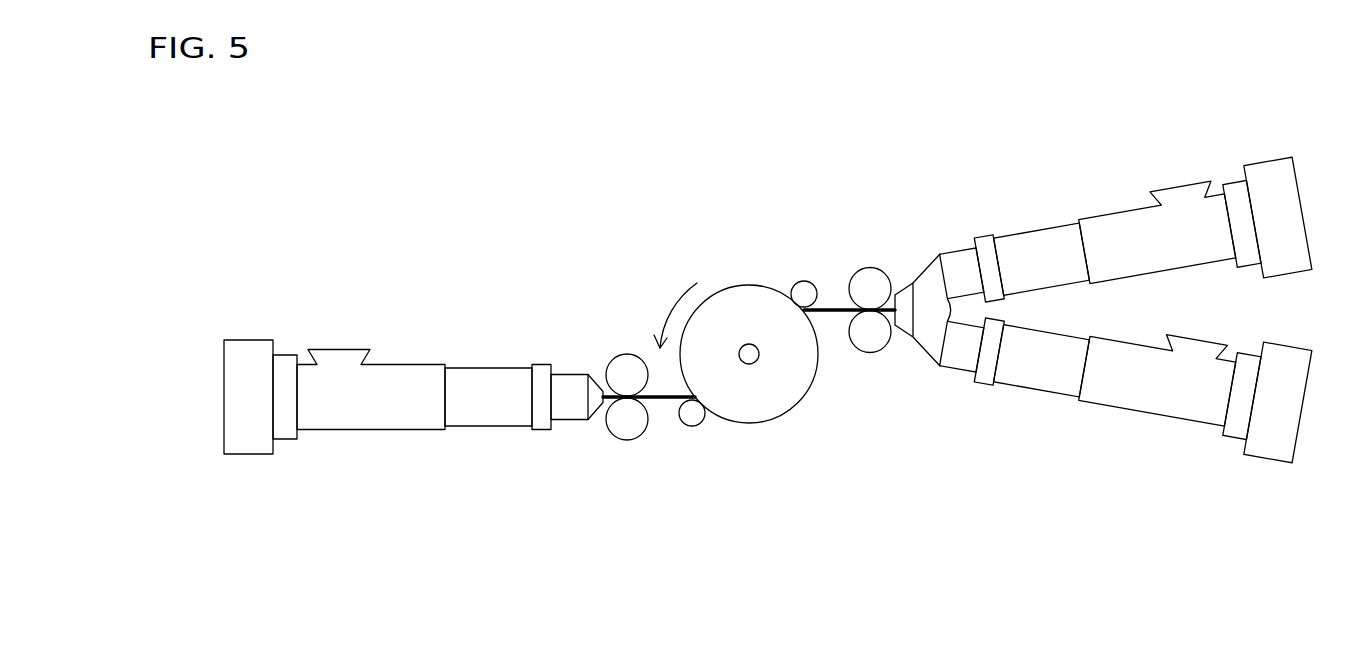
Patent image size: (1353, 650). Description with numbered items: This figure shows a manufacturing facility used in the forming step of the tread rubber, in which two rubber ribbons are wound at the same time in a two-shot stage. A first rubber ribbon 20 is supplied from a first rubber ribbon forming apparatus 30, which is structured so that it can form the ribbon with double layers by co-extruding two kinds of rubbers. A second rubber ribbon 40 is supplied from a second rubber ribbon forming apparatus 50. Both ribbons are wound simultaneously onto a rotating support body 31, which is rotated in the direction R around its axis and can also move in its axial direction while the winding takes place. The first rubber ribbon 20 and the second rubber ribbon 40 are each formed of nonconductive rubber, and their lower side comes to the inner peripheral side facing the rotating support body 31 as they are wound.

The first rubber ribbon 20 is at (834, 308).
The first rubber ribbon forming apparatus 30 is at (1203, 453).
The rotating support body 31 is at (778, 400).
The second rubber ribbon 40 is at (662, 402).
The second rubber ribbon forming apparatus 50 is at (356, 462).